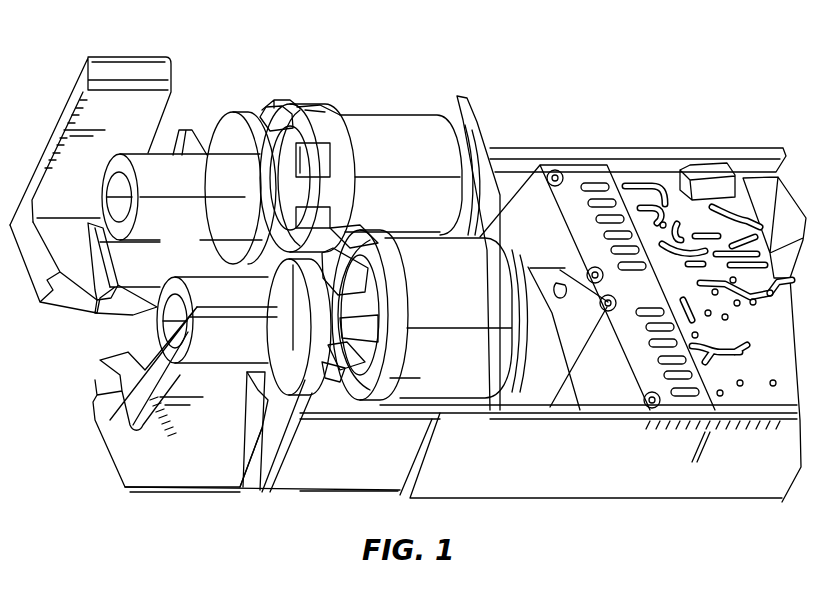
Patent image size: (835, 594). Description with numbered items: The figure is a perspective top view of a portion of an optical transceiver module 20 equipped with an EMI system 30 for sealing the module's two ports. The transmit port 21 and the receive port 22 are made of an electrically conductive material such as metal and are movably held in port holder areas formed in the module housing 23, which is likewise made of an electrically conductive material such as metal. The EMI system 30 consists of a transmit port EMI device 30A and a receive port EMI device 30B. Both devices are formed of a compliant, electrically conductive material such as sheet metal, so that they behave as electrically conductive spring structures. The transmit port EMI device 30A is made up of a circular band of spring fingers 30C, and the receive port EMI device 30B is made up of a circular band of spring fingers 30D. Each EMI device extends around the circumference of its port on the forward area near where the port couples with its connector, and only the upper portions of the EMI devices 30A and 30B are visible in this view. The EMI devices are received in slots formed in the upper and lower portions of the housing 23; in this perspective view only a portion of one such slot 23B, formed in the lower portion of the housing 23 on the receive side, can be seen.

The optical transceiver module 20 is at (551, 76).
The transmit port 21 is at (397, 124).
The receive port 22 is at (470, 372).
The module housing 23 is at (625, 463).
The slot 23B is at (347, 397).
The EMI system 30 is at (320, 108).
The transmit port EMI device 30A is at (337, 150).
The receive port EMI device 30B is at (394, 281).
The spring fingers 30C is at (268, 108).
The spring fingers 30D is at (322, 376).